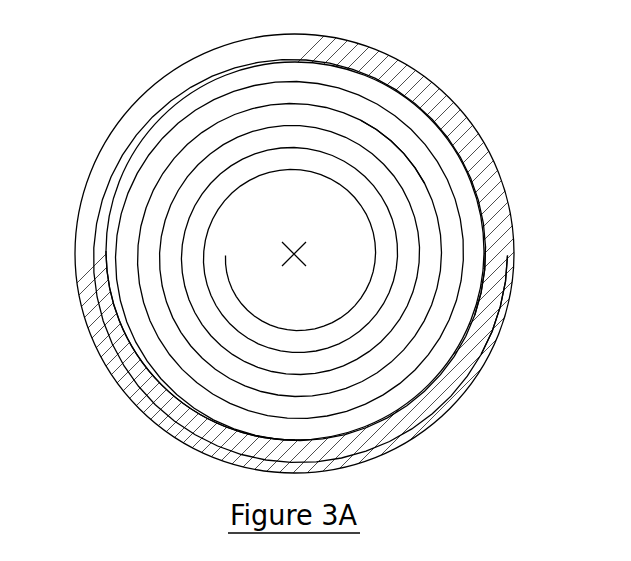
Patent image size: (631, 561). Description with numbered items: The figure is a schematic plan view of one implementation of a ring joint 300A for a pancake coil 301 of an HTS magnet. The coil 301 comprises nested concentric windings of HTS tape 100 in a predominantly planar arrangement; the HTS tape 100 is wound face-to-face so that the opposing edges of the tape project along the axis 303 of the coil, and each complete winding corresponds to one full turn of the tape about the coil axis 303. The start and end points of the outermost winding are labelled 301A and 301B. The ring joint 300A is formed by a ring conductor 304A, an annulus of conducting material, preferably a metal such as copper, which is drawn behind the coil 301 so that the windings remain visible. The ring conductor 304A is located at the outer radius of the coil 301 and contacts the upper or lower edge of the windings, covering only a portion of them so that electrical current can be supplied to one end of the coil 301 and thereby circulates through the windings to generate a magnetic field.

The ring joint 300A is at (108, 105).
The HTS tape 100 is at (395, 142).
The pancake coil 301 is at (438, 213).
The start point of the outermost winding 301A is at (508, 256).
The end point of the outermost winding 301B is at (477, 272).
The coil axis 303 is at (284, 240).
The ring conductor 304A is at (143, 402).